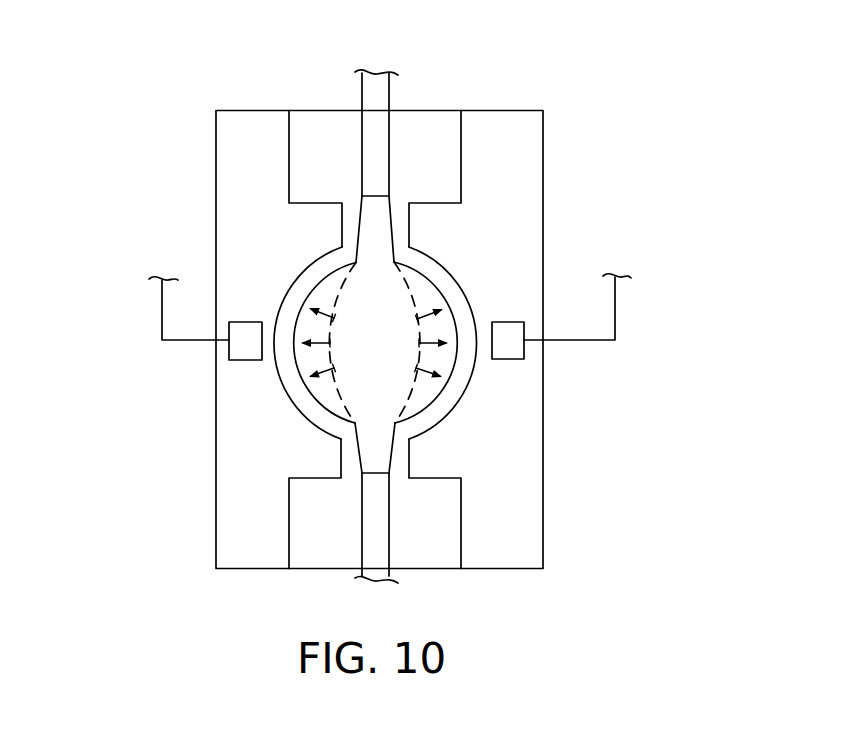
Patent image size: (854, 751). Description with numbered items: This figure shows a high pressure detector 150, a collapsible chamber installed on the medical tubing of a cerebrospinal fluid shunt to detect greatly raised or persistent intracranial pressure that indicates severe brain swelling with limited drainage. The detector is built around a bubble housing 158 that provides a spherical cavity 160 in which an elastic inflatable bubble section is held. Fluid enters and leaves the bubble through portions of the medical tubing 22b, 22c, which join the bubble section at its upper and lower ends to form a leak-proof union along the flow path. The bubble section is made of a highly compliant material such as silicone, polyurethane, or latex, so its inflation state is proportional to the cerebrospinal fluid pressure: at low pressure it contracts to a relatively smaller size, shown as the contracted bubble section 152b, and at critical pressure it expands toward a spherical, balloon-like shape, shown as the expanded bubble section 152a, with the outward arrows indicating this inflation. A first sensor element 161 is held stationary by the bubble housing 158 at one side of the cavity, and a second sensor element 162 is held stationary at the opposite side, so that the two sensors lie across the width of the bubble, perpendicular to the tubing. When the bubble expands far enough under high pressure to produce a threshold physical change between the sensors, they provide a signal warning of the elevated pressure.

The high pressure detector 150 is at (160, 149).
The bubble housing 158 is at (543, 128).
The second portion of the medical tubing 22b is at (392, 128).
The second portion of the medical tubing 22c is at (389, 516).
The inflatable bubble section in expanded state 152a is at (425, 275).
The inflatable bubble section in contracted state 152b is at (412, 303).
The spherical cavity 160 is at (446, 417).
The first sensor element 161 is at (244, 349).
The second sensor element 162 is at (508, 343).